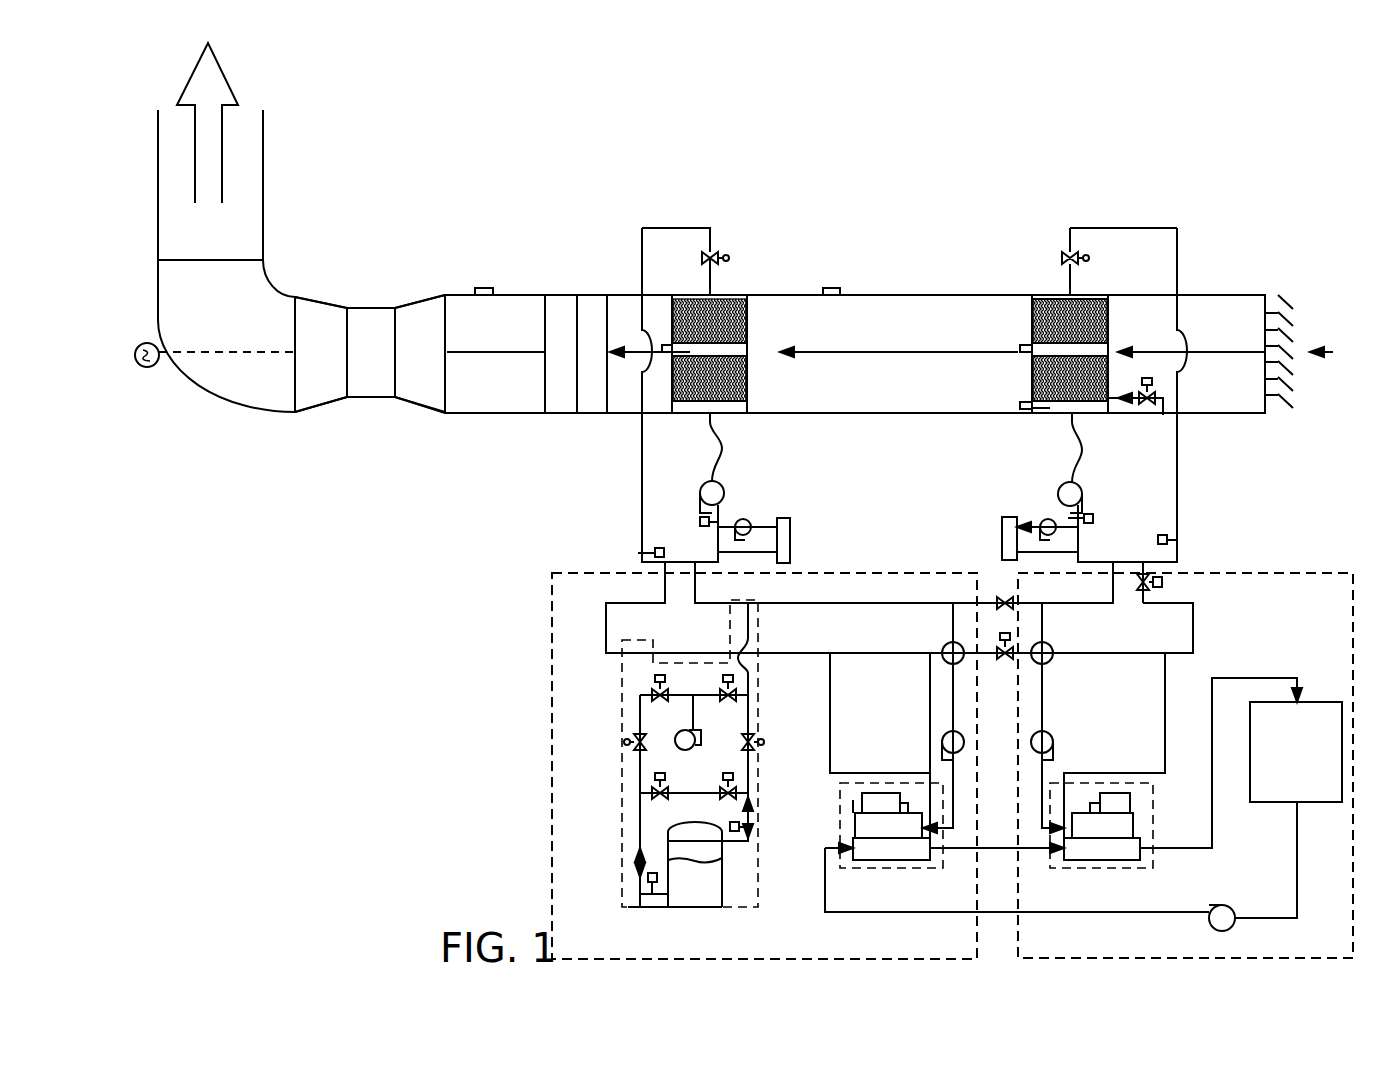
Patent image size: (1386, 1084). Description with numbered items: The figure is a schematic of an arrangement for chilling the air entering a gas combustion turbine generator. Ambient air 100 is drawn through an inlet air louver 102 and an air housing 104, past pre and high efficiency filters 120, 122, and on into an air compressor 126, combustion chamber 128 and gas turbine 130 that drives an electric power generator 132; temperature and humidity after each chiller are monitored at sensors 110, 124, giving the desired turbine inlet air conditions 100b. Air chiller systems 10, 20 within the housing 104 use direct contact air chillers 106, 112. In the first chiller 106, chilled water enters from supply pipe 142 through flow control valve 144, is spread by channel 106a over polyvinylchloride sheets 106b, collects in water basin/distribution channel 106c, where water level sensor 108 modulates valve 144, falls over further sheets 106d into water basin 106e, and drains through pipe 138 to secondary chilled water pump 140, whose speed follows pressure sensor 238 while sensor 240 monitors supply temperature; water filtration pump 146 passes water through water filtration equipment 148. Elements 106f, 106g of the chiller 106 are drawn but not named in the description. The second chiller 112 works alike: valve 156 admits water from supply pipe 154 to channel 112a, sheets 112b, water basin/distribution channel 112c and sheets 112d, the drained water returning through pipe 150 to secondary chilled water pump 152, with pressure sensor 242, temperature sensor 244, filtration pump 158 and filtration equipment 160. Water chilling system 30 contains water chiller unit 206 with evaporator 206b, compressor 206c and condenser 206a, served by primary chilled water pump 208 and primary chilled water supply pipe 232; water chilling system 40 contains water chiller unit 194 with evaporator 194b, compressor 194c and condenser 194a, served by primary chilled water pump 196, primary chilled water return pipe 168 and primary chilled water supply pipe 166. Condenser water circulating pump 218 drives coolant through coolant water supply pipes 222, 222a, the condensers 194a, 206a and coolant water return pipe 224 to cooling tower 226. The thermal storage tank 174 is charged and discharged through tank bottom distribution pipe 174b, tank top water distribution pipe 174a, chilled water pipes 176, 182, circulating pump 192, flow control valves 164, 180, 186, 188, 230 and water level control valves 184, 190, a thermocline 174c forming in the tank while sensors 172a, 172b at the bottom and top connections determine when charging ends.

The air chiller system 10 is at (1172, 172).
The air chiller system 20 is at (763, 172).
The water chilling system 30 is at (1332, 545).
The water chilling system 40 is at (520, 545).
The ambient air 100 is at (1220, 350).
The gas turbine inlet air conditions 100b is at (510, 352).
The inlet air louver 102 is at (1270, 293).
The air housing 104 is at (937, 256).
The direct contact air chiller 106 is at (1108, 300).
The channel 106a is at (1042, 300).
The polyvinylchloride sheets 106b is at (1032, 330).
The water basin/distribution channel 106c is at (1108, 345).
The polyvinylchloride sheets 106d is at (1032, 380).
The water basin 106e is at (1085, 403).
The coil drain valve 106f is at (1160, 410).
The coil sensor 106g is at (1020, 408).
The water level sensor 108 is at (1032, 352).
The sensors 110 is at (835, 288).
The direct contact air chiller 112 is at (750, 296).
The channel 112a is at (738, 298).
The polyvinylchloride sheets 112b is at (748, 345).
The water basin/distribution channel 112c is at (748, 338).
The polyvinylchloride sheets 112d is at (672, 398).
The pre filter 120 is at (593, 310).
The high efficiency filter 122 is at (551, 310).
The sensors 124 is at (488, 288).
The air compressor 126 is at (428, 318).
The combustion chamber 128 is at (388, 322).
The gas turbine 130 is at (318, 318).
The electric power generator 132 is at (152, 343).
The pipe 138 is at (1075, 430).
The secondary chilled water pump 140 is at (1082, 487).
The supply pipe 142 is at (1180, 520).
The flow control valve 144 is at (1066, 252).
The water filtration pump 146 is at (1046, 519).
The water filtration equipment 148 is at (1008, 517).
The pipe 150 is at (722, 435).
The secondary chilled water pump 152 is at (724, 487).
The supply pipe 154 is at (642, 542).
The flow control valve 156 is at (714, 252).
The water filtration pump 158 is at (750, 520).
The water filtration equipment 160 is at (790, 532).
The flow control valve 164 is at (1005, 660).
The primary chilled water supply pipe 166 is at (888, 653).
The primary chilled water return pipe 168 is at (945, 600).
The sensor 172a is at (650, 887).
The sensor 172b is at (748, 818).
The thermal storage tank 174 is at (706, 753).
The tank top water distribution pipe 174a is at (712, 845).
The tank bottom distribution pipe 174b is at (690, 907).
The thermocline 174c is at (718, 865).
The chilled water pipe 176 is at (750, 782).
The flow control valve 180 is at (640, 800).
The chilled water pipe 182 is at (640, 780).
The water level control valve 184 is at (752, 738).
The flow control valve 186 is at (701, 745).
The flow control valve 188 is at (657, 688).
The water level control valve 190 is at (632, 742).
The chilled water thermal storage system circulating pump 192 is at (688, 730).
The water chiller unit 194 is at (920, 870).
The condenser 194a is at (930, 840).
The evaporator 194b is at (853, 803).
The compressor 194c is at (893, 790).
The primary chilled water pump 196 is at (948, 735).
The water chiller unit 206 is at (1150, 870).
The condenser 206a is at (1140, 845).
The evaporator 206b is at (1133, 820).
The compressor 206c is at (1112, 793).
The primary chilled water pump 208 is at (1052, 735).
The condenser water circulating pump 218 is at (1232, 908).
The coolant water supply pipe 222 is at (1060, 912).
The coolant water supply pipe 222a is at (985, 848).
The coolant water return pipe 224 is at (1212, 835).
The cooling tower 226 is at (1318, 702).
The flow control valve 230 is at (1163, 578).
The primary chilled water supply pipe 232 is at (1193, 622).
The pressure sensor 238 is at (1093, 515).
The sensor 240 is at (1167, 537).
The pressure sensor 242 is at (703, 517).
The sensor 244 is at (660, 548).